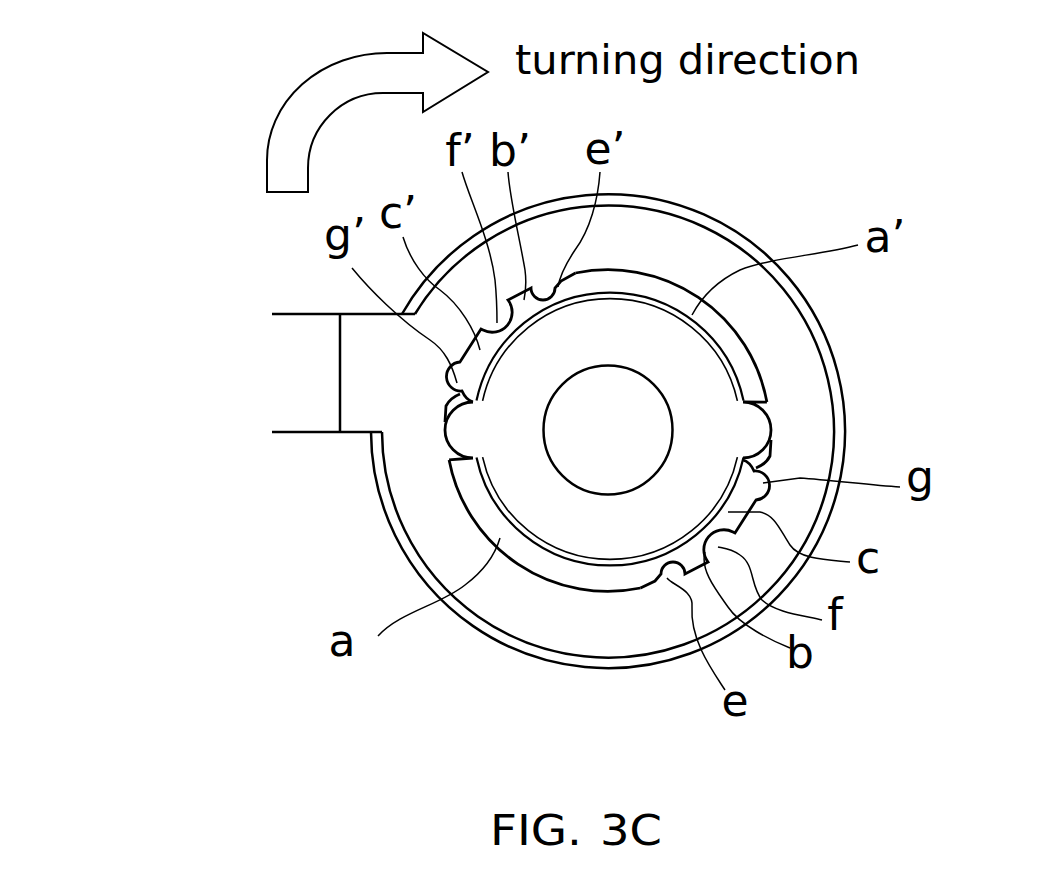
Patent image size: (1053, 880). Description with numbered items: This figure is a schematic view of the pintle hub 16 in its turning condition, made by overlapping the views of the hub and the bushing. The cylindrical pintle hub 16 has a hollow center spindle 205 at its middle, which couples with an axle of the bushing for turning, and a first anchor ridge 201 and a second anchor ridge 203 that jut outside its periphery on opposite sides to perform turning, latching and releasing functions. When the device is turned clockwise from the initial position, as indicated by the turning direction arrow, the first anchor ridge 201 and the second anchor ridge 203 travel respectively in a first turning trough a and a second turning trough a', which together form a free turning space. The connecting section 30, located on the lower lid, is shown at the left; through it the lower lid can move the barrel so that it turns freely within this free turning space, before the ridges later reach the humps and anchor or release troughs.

The connecting section 30 is at (300, 388).
The first anchor ridge 201 is at (467, 440).
The second anchor ridge 203 is at (757, 436).
The center spindle 205 is at (632, 422).
The pintle hub 16 is at (590, 535).